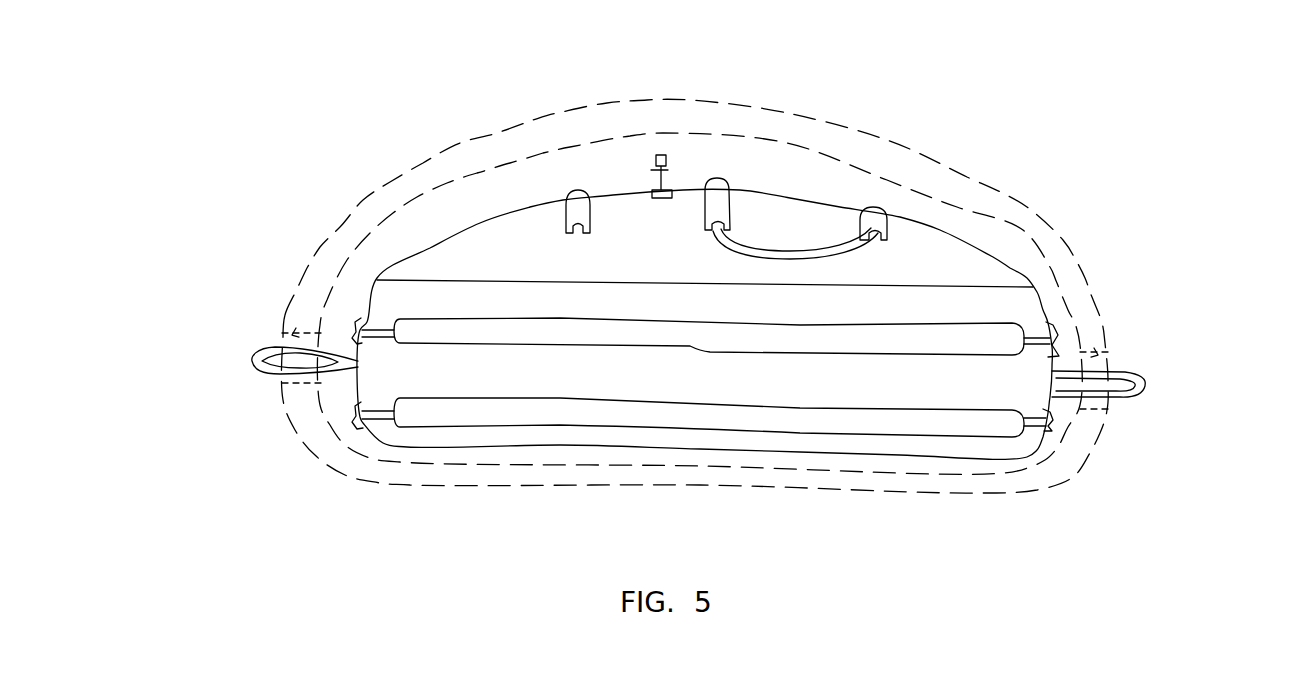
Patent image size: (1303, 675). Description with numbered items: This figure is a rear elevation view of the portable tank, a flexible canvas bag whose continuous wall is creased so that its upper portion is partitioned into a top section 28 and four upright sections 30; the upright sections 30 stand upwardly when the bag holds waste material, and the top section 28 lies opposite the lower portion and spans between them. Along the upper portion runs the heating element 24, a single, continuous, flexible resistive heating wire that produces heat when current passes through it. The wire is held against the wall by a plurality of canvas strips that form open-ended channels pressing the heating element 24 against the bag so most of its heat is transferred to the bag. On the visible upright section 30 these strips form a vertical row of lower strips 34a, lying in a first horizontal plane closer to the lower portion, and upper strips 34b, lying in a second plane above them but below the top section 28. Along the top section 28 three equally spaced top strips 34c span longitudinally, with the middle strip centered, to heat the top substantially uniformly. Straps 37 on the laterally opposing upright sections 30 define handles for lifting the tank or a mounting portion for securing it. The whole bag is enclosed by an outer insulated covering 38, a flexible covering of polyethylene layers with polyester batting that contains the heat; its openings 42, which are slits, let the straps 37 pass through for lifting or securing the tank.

The heating element 24 is at (807, 232).
The top section 28 is at (982, 264).
The upright sections 30 is at (358, 385).
The lower strips 34a is at (264, 441).
The upper strips 34b is at (356, 327).
The top strips 34c is at (577, 190).
The straps 37 is at (227, 363).
The outer insulated covering 38 is at (998, 170).
The openings 42 is at (287, 342).